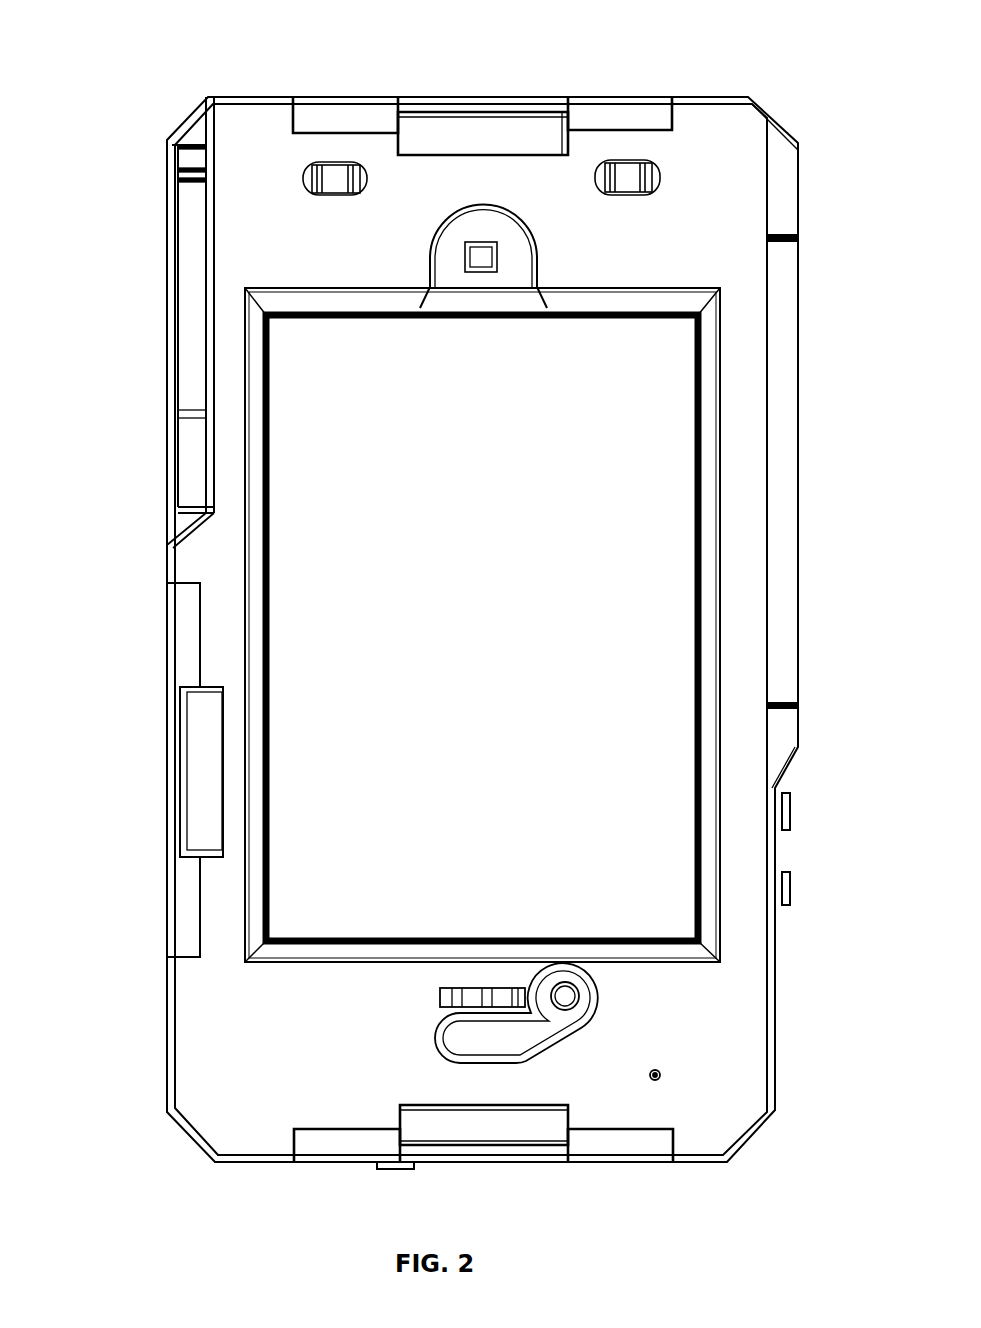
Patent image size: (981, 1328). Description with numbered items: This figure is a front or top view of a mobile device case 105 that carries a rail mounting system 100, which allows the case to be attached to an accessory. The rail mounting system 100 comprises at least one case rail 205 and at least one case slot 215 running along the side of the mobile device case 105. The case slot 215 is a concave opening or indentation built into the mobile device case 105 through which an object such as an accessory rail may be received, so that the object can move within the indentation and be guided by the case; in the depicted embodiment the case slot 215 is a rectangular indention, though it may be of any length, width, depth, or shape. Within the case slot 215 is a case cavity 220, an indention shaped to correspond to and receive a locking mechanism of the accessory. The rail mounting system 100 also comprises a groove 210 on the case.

The rail mounting system 100 is at (619, 70).
The mobile device case 105 is at (742, 132).
The case rail 205 is at (175, 478).
The groove 210 is at (195, 412).
The case slot 215 is at (195, 230).
The case cavity 220 is at (195, 158).